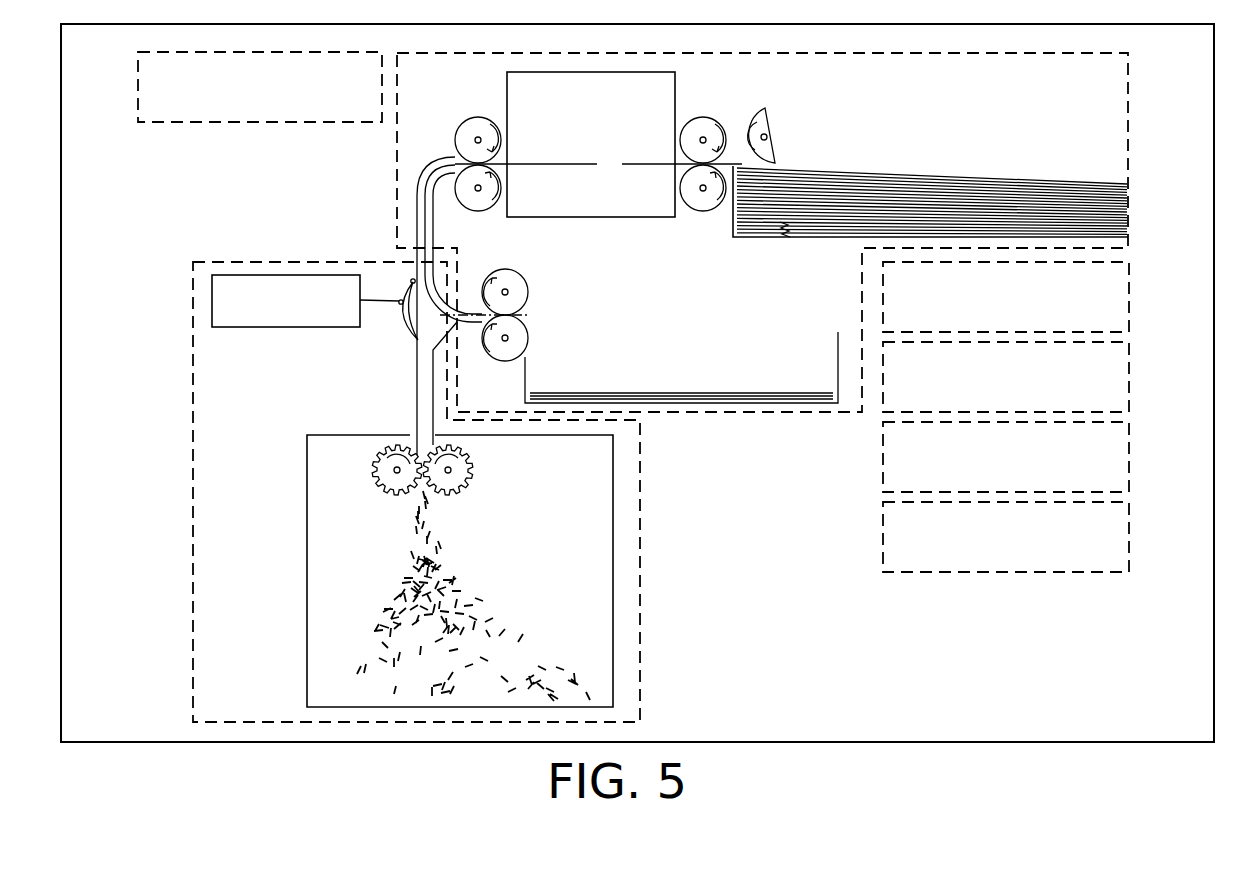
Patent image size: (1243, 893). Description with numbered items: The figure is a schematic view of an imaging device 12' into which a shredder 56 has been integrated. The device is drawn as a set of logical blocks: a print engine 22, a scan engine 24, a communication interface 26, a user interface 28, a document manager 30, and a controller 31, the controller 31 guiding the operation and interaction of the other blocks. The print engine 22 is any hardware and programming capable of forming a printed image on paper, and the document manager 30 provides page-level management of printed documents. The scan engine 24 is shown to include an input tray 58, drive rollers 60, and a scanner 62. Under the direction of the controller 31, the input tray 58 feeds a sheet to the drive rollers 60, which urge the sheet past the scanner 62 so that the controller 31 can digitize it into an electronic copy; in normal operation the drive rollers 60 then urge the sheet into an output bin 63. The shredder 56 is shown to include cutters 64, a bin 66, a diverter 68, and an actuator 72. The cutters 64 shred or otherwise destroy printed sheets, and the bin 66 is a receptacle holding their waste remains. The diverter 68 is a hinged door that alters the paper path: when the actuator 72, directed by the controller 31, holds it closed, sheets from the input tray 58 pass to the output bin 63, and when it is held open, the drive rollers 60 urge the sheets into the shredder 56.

The imaging device 12' is at (611, 383).
The print engine 22 is at (1129, 458).
The scan engine 24 is at (1128, 80).
The communication interface 26 is at (138, 83).
The user interface 28 is at (1129, 300).
The document manager 30 is at (1129, 533).
The controller 31 is at (1129, 377).
The shredder 56 is at (193, 395).
The input tray 58 is at (733, 230).
The drive rollers 60 is at (705, 120).
The scanner 62 is at (507, 98).
The output bin 63 is at (628, 387).
The cutters 64 is at (428, 484).
The bin 66 is at (307, 637).
The diverter 68 is at (406, 322).
The actuator 72 is at (312, 322).